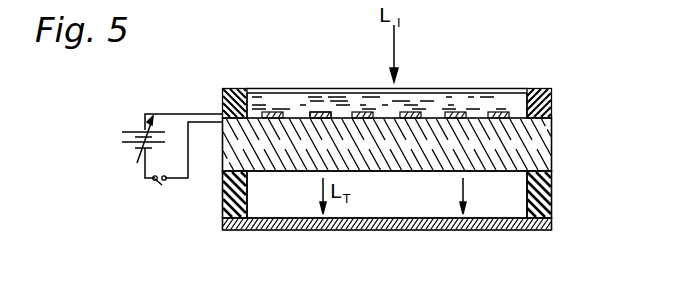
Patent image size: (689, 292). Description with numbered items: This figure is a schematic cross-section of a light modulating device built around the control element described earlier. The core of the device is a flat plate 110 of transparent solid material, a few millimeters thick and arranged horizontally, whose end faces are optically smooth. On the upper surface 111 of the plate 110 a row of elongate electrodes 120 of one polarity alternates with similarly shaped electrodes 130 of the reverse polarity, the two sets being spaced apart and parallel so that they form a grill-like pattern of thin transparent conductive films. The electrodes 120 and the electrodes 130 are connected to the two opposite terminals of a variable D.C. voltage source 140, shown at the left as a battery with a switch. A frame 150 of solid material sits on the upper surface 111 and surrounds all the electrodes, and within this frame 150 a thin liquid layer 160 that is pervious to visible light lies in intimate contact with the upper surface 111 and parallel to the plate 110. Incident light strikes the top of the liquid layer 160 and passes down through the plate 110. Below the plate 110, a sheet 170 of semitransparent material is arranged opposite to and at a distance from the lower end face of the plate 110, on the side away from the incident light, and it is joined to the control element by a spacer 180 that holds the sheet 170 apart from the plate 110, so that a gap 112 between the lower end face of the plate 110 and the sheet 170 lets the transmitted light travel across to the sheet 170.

The flat plate 110 is at (538, 150).
The upper surface 111 is at (437, 118).
The cavity 112 is at (308, 172).
The elongate electrodes 120 is at (262, 112).
The electrodes of reverse polarity 130 is at (322, 112).
The D.C. voltage source 140 is at (128, 150).
The frame 150 is at (552, 93).
The liquid layer 160 is at (480, 100).
The semitransparent sheet 170 is at (495, 230).
The spacer 180 is at (545, 196).